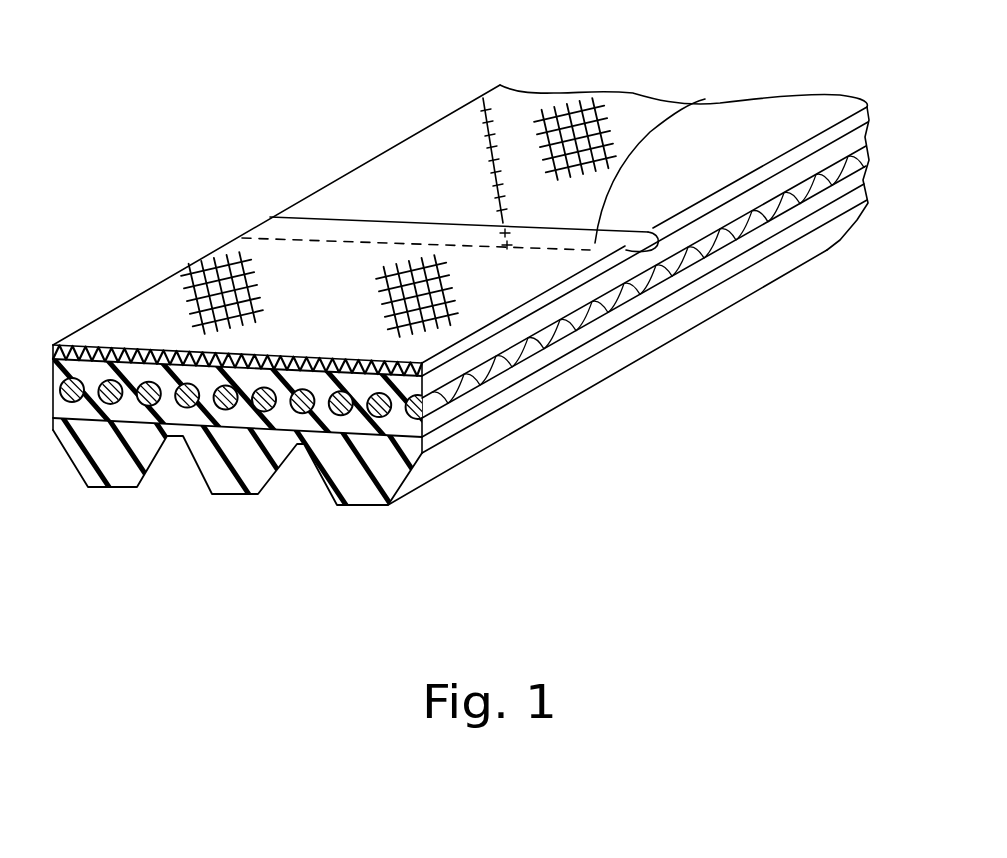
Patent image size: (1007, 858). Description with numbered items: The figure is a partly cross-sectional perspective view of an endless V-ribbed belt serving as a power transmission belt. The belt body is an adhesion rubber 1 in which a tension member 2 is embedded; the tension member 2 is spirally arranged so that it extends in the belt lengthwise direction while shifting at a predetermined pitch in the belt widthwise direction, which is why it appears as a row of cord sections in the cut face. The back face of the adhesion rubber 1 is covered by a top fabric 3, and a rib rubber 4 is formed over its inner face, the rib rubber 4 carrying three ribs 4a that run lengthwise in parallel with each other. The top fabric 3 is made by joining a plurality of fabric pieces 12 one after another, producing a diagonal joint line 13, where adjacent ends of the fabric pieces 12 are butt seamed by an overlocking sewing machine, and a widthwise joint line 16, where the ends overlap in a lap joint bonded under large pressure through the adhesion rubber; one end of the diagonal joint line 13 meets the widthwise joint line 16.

The adhesion rubber 1 is at (457, 410).
The tension member 2 is at (106, 384).
The top fabric 3 is at (278, 257).
The rib rubber 4 is at (460, 386).
The ribs 4a is at (125, 479).
The fabric pieces 12 is at (421, 160).
The diagonal joint line 13 is at (486, 128).
The widthwise joint line 16 is at (705, 99).